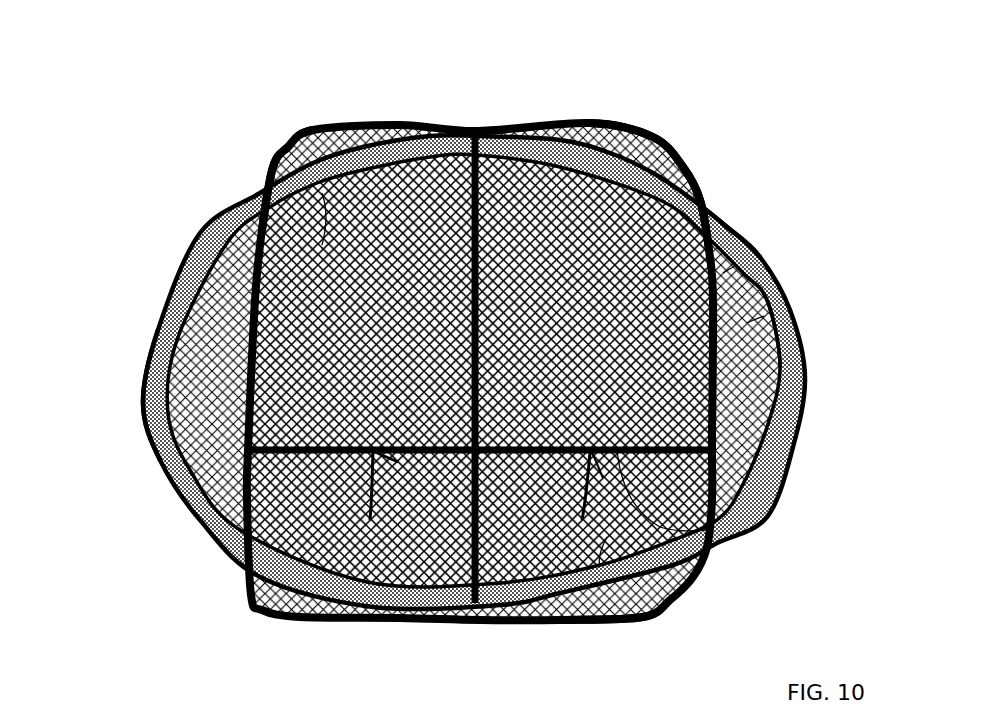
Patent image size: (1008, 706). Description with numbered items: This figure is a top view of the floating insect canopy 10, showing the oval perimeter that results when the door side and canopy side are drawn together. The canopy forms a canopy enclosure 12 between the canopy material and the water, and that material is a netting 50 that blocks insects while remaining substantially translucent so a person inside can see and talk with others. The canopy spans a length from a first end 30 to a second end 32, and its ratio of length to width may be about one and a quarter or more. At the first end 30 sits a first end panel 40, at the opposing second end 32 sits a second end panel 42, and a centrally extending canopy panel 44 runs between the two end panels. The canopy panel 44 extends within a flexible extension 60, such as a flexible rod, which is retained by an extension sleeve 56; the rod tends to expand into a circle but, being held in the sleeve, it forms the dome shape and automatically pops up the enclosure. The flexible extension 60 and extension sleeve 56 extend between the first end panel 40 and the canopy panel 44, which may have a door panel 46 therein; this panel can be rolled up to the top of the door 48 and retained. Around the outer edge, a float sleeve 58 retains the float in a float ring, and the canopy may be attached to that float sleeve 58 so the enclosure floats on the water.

The floating insect canopy 10 is at (192, 202).
The canopy enclosure 12 is at (300, 134).
The first end 30 is at (803, 372).
The second end 32 is at (140, 402).
The first end panel 40 is at (767, 322).
The second end panel 42 is at (195, 337).
The canopy panel 44 is at (268, 182).
The door panel 46 is at (688, 600).
The door 48 is at (712, 540).
The netting 50 is at (752, 242).
The extension sleeve 56 is at (676, 146).
The float sleeve 58 is at (790, 432).
The flexible extension 60 is at (700, 172).